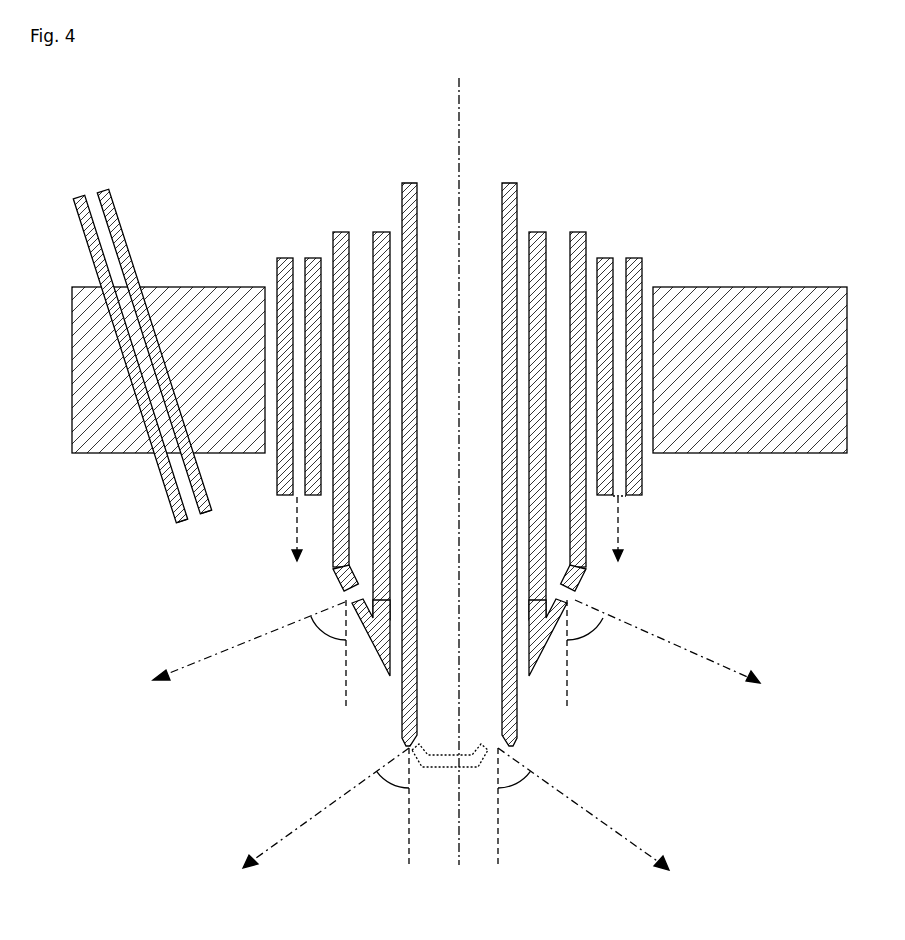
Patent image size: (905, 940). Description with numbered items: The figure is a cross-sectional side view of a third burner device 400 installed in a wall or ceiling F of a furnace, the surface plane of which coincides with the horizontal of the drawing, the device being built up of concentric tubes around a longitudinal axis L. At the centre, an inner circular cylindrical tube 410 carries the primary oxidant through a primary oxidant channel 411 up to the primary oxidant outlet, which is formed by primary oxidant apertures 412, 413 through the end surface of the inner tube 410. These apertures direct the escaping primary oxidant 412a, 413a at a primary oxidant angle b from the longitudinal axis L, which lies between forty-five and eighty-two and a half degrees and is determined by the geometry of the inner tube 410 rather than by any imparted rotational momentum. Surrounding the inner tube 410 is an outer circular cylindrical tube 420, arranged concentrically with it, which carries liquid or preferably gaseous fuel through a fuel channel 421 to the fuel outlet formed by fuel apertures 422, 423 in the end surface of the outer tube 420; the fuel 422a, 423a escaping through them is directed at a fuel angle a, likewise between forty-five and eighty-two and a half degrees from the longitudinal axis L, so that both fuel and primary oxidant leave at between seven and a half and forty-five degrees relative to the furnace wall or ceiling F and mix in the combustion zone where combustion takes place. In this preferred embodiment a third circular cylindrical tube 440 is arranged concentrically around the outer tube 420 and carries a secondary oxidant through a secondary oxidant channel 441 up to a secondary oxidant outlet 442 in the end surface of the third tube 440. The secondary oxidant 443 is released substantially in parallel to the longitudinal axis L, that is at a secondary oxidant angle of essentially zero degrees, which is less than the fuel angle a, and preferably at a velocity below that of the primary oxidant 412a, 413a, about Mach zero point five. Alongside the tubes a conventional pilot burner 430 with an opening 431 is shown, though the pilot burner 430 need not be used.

The burner device 400 is at (704, 152).
The inner circular cylindrical tube 410 is at (516, 195).
The primary oxidant channel 411 is at (476, 450).
The primary oxidant aperture 412 is at (412, 748).
The primary oxidant aperture 413 is at (490, 749).
The primary oxidant 412a is at (318, 808).
The primary oxidant 413a is at (595, 809).
The outer circular cylindrical tube 420 is at (506, 398).
The fuel channel 421 is at (360, 237).
The fuel aperture 422 is at (345, 600).
The fuel aperture 423 is at (575, 600).
The fuel 422a is at (249, 641).
The fuel 423a is at (669, 641).
The pilot burner 430 is at (115, 217).
The opening 431 is at (197, 520).
The third circular cylindrical tube 440 is at (642, 472).
The secondary oxidant channel 441 is at (300, 257).
The secondary oxidant outlet 442 is at (618, 497).
The secondary oxidant 443 is at (461, 529).
The longitudinal axis L is at (466, 471).
The wall or ceiling of the furnace F is at (786, 287).
The fuel angle a is at (457, 633).
The primary oxidant angle b is at (455, 789).